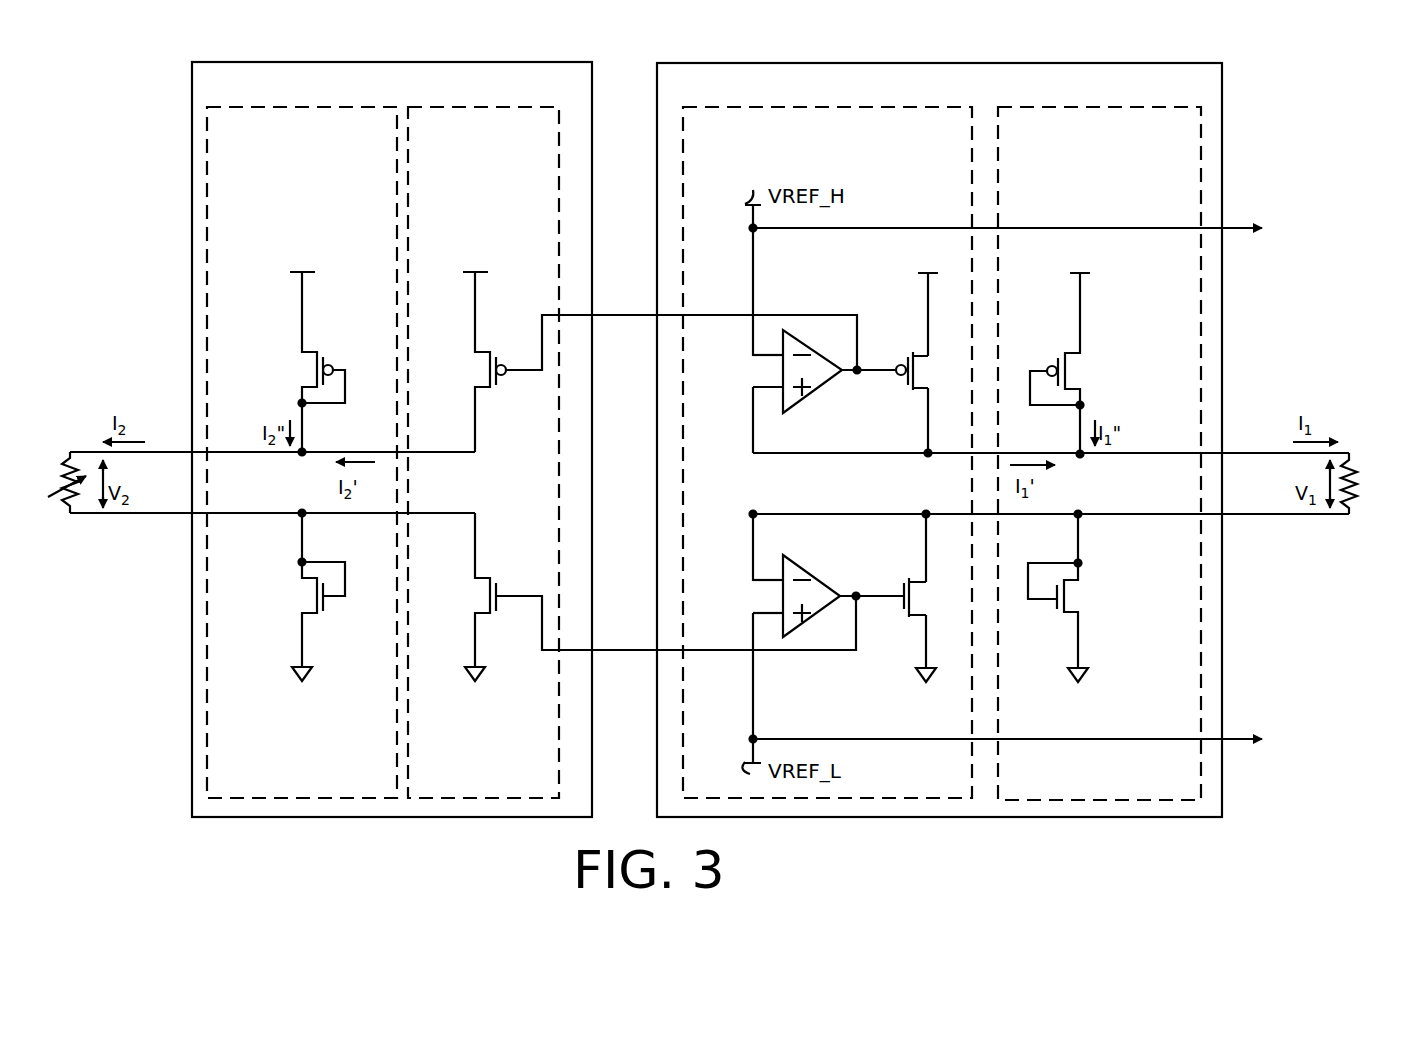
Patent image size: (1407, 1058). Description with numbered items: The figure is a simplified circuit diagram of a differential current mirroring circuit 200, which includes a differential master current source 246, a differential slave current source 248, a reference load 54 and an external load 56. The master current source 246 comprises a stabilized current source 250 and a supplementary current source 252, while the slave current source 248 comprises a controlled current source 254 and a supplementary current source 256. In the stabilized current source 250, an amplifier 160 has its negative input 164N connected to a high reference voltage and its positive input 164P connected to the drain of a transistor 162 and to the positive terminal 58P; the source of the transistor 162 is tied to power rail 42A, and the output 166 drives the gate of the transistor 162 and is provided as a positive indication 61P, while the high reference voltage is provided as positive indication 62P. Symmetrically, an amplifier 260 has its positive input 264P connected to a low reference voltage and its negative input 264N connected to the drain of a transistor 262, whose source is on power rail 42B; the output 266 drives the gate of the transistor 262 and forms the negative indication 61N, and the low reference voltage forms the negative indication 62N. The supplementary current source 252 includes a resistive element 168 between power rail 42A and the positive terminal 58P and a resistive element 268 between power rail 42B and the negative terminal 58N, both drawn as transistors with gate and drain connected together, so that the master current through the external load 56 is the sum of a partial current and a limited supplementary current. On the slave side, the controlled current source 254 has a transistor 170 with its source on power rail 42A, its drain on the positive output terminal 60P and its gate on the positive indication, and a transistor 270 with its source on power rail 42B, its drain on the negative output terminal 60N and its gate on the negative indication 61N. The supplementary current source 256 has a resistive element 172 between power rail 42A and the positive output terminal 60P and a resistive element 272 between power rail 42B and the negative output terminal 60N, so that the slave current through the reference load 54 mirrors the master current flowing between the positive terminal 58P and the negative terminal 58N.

The differential current mirroring circuit 200 is at (1246, 152).
The differential slave current source 248 is at (392, 439).
The differential master current source 246 is at (939, 440).
The supplementary current source 256 is at (302, 452).
The controlled current source 254 is at (483, 452).
The stabilized current source 250 is at (827, 452).
The supplementary current source 252 is at (1099, 453).
The power rail 42A is at (303, 270).
The power rail 42B is at (298, 676).
The resistive element 172 is at (309, 350).
The transistor 170 is at (483, 392).
The resistive element 272 is at (309, 616).
The transistor 270 is at (484, 578).
The amplifier 160 is at (815, 398).
The transistor 162 is at (917, 352).
The negative input 164N is at (765, 350).
The positive input 164P is at (765, 387).
The output 166 is at (857, 376).
The resistive element 168 is at (1070, 352).
The amplifier 260 is at (815, 568).
The transistor 262 is at (912, 617).
The negative input 264N is at (765, 577).
The positive input 264P is at (765, 613).
The output 266 is at (857, 590).
The resistive element 268 is at (1070, 614).
The reference load 54 is at (58, 482).
The external load 56 is at (1352, 500).
The positive output terminal 60P is at (180, 452).
The negative output terminal 60N is at (180, 513).
The positive terminal 58P is at (1228, 453).
The negative terminal 58N is at (1233, 514).
The positive indication 61P is at (598, 315).
The negative indication 61N is at (598, 650).
The positive indication 62P is at (1238, 228).
The negative indication 62N is at (1238, 739).